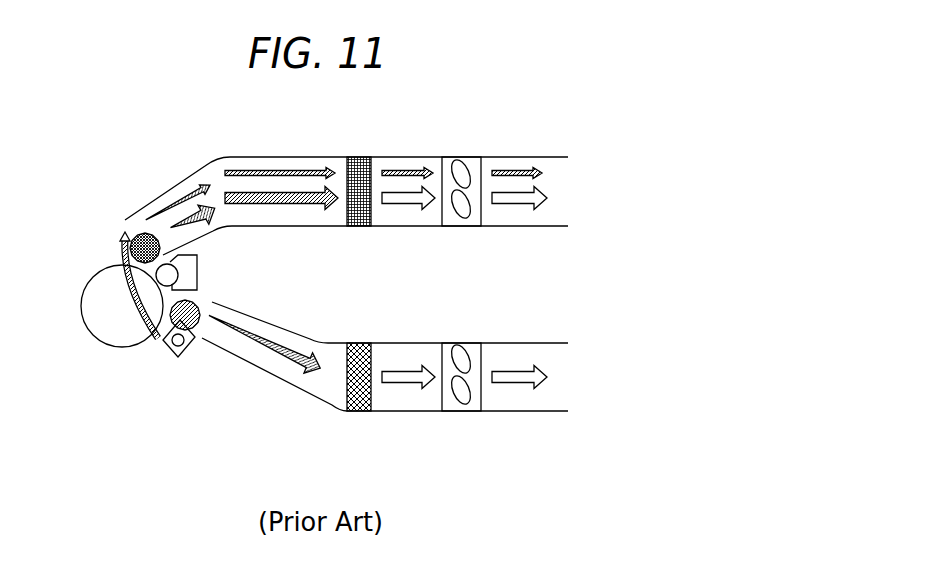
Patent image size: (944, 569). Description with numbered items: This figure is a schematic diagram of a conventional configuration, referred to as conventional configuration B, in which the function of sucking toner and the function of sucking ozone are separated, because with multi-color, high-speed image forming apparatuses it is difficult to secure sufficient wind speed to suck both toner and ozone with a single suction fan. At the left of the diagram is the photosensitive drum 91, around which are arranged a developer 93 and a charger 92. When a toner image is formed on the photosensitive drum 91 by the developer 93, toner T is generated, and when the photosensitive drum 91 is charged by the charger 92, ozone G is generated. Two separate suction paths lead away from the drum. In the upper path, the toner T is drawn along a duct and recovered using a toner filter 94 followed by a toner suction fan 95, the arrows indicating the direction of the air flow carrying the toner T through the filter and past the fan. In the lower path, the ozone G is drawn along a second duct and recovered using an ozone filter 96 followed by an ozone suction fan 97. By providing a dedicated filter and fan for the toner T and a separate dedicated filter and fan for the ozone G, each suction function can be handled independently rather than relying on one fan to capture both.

The photosensitive drum 91 is at (92, 338).
The charger 92 is at (172, 352).
The developer 93 is at (197, 260).
The toner filter 94 is at (362, 157).
The toner suction fan 95 is at (463, 157).
The ozone filter 96 is at (360, 413).
The ozone suction fan 97 is at (462, 413).
The toner T is at (142, 232).
The ozone G is at (199, 302).